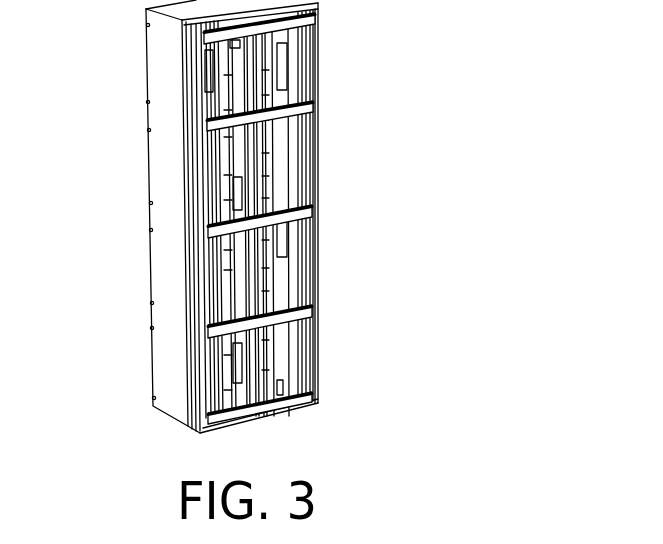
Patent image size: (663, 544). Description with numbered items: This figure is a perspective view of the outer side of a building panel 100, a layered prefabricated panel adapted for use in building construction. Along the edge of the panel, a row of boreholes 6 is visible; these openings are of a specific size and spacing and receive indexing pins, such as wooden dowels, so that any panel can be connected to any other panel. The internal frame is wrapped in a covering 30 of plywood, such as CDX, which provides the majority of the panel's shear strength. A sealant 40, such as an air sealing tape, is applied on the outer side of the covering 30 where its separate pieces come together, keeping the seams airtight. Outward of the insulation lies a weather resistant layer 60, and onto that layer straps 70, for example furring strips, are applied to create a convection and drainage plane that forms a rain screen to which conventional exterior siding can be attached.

The building panel 100 is at (346, 158).
The boreholes 6 is at (146, 26).
The covering 30 is at (163, 165).
The sealant 40 is at (183, 223).
The weather resistant layer 60 is at (222, 283).
The straps 70 is at (290, 320).